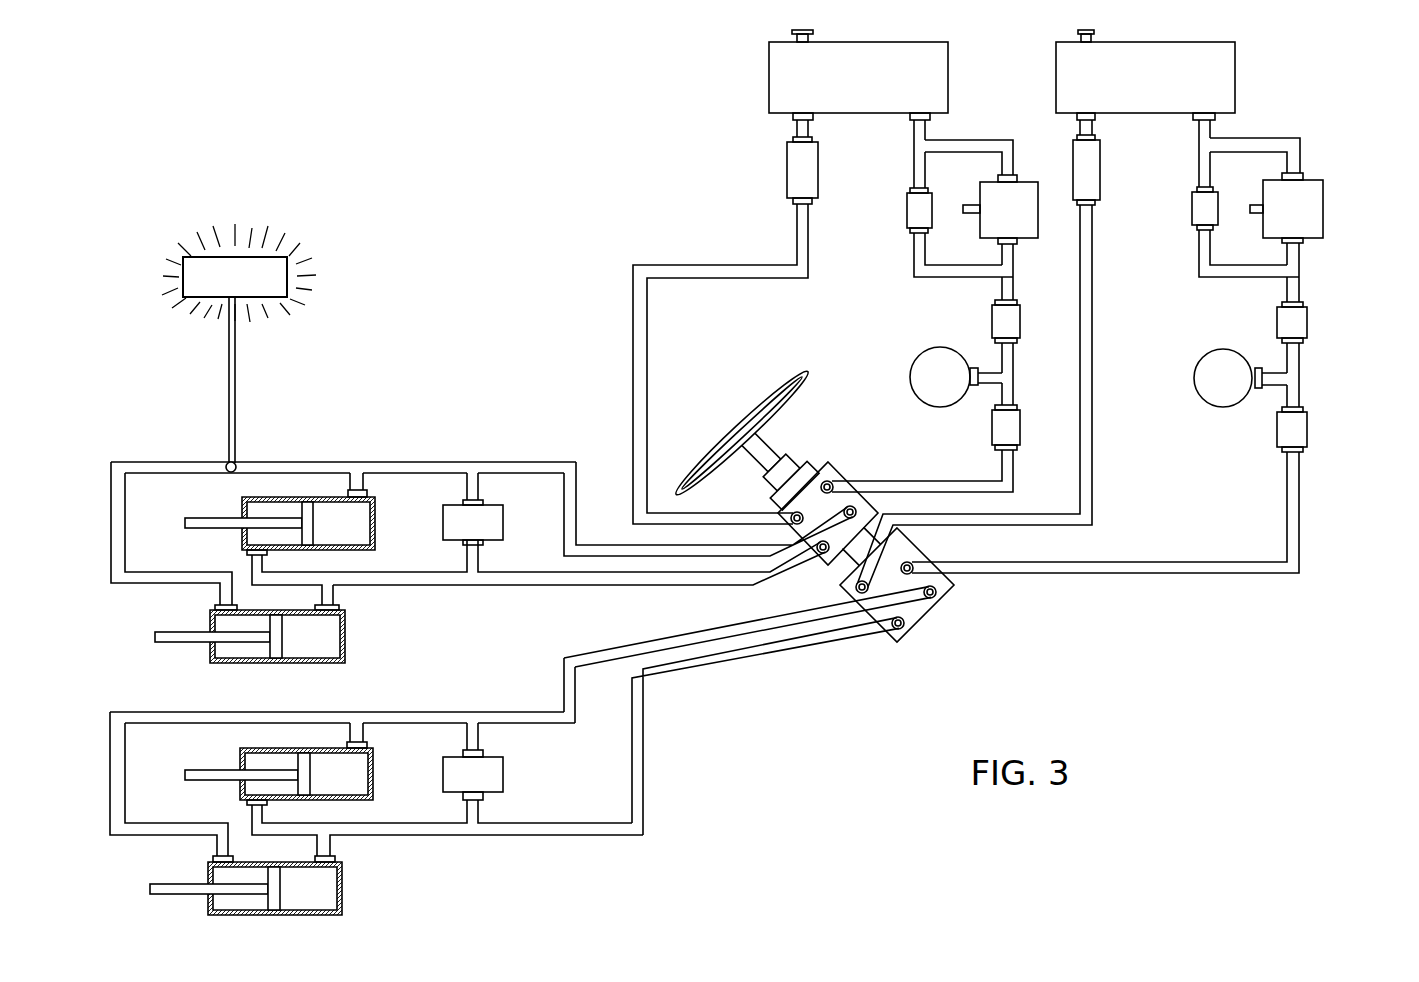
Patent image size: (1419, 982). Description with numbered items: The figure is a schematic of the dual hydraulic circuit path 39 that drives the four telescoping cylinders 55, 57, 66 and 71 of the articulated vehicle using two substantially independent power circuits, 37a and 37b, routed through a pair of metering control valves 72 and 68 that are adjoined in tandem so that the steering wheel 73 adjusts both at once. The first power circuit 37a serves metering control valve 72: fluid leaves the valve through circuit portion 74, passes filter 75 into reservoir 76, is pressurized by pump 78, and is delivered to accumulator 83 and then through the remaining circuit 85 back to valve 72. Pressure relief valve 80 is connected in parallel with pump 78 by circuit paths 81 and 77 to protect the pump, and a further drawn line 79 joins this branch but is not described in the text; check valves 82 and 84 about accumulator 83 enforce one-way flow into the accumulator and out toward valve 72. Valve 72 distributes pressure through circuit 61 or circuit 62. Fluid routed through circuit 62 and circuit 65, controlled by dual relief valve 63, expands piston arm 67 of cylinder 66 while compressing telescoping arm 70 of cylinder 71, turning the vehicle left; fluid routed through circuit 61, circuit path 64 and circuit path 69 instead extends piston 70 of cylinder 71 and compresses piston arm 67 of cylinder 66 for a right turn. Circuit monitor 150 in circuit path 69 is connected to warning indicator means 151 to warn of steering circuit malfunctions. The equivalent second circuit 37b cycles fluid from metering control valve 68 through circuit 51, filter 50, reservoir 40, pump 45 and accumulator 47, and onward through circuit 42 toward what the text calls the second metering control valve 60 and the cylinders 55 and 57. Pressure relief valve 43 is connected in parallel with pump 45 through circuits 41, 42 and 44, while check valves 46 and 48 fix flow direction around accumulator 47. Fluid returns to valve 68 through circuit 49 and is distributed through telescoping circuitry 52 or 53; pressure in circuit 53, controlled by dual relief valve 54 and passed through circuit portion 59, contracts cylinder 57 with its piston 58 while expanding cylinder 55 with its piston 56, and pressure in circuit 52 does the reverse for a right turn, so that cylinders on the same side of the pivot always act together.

The first hydraulic power circuit path 37a is at (689, 266).
The independent circuit 37b is at (1303, 162).
The dual hydraulic circuit path 39 is at (740, 110).
The reservoir 40 is at (1242, 62).
The circuit 41 is at (1272, 142).
The circuit 42 is at (1201, 170).
The pressure relief valve 43 is at (1203, 218).
The circuit 44 is at (1250, 275).
The pump 45 is at (1325, 219).
The check valve 46 is at (1310, 322).
The accumulator 47 is at (1240, 390).
The check valve 48 is at (1300, 434).
The circuit 49 is at (1058, 576).
The filter 50 is at (1076, 178).
The circuit 51 is at (1092, 400).
The telescoping circuitry 52 is at (780, 618).
The telescoping circuitry 53 is at (818, 641).
The dual relief valve 54 is at (496, 775).
The telescoping cylinder 55 is at (340, 890).
The piston 56 is at (266, 886).
The telescoping cylinder 57 is at (350, 758).
The piston 58 is at (303, 762).
The circuit portion 59 is at (384, 836).
The second metering control valve 60 is at (108, 826).
The circuit path 61 is at (604, 547).
The circuit 62 is at (625, 578).
The dual relief valve 63 is at (494, 528).
The circuit path 64 is at (447, 462).
The circuit 65 is at (413, 575).
The telescoping cylinder 66 is at (305, 648).
The piston arm 67 is at (262, 642).
The metering control valve 68 is at (918, 612).
The circuit path 69 is at (111, 545).
The piston 70 is at (309, 503).
The telescoping cylinder 71 is at (363, 503).
The metering control valve 72 is at (818, 472).
The steering wheel 73 is at (730, 435).
The circuit portion 74 is at (637, 305).
The filter 75 is at (796, 183).
The reservoir 76 is at (878, 41).
The circuit path 77 is at (960, 140).
The pump 78 is at (1028, 218).
The conduit 79 is at (961, 278).
The pressure relief valve 80 is at (915, 210).
The circuit path 81 is at (911, 172).
The check valve 82 is at (1015, 321).
The accumulator 83 is at (926, 373).
The check valve 84 is at (1008, 430).
The remaining circuit 85 is at (1005, 487).
The circuit monitor 150 is at (237, 466).
The warning indicator means 151 is at (286, 277).